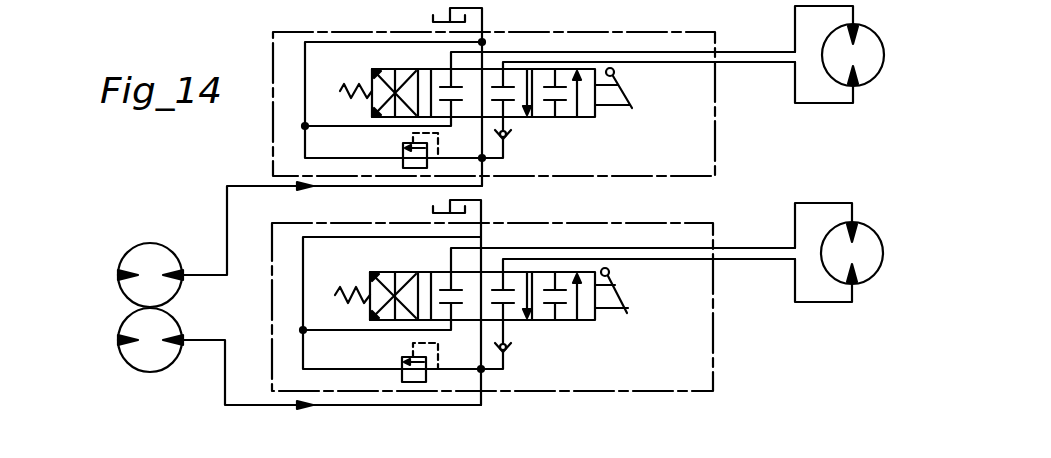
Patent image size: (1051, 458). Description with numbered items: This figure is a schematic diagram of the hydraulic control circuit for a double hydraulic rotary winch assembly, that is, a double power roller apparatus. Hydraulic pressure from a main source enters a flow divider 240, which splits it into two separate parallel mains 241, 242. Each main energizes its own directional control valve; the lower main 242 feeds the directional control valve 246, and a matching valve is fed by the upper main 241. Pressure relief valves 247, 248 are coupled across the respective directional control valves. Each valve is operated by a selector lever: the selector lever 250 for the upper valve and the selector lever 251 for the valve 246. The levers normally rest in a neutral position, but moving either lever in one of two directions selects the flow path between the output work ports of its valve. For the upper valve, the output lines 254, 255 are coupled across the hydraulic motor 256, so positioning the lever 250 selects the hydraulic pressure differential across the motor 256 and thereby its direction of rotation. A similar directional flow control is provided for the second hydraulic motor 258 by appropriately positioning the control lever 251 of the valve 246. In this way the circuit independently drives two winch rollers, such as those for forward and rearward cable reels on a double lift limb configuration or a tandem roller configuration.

The flow divider 240 is at (143, 222).
The main line 241 is at (231, 186).
The main line 242 is at (224, 380).
The directional control valve 246 is at (545, 336).
The pressure relief valve 247 is at (403, 151).
The pressure relief valve 248 is at (403, 363).
The selector lever 250 is at (626, 90).
The selector lever 251 is at (622, 298).
The output line 254 is at (750, 52).
The output line 255 is at (755, 63).
The hydraulic motor 256 is at (872, 38).
The hydraulic motor 258 is at (873, 223).